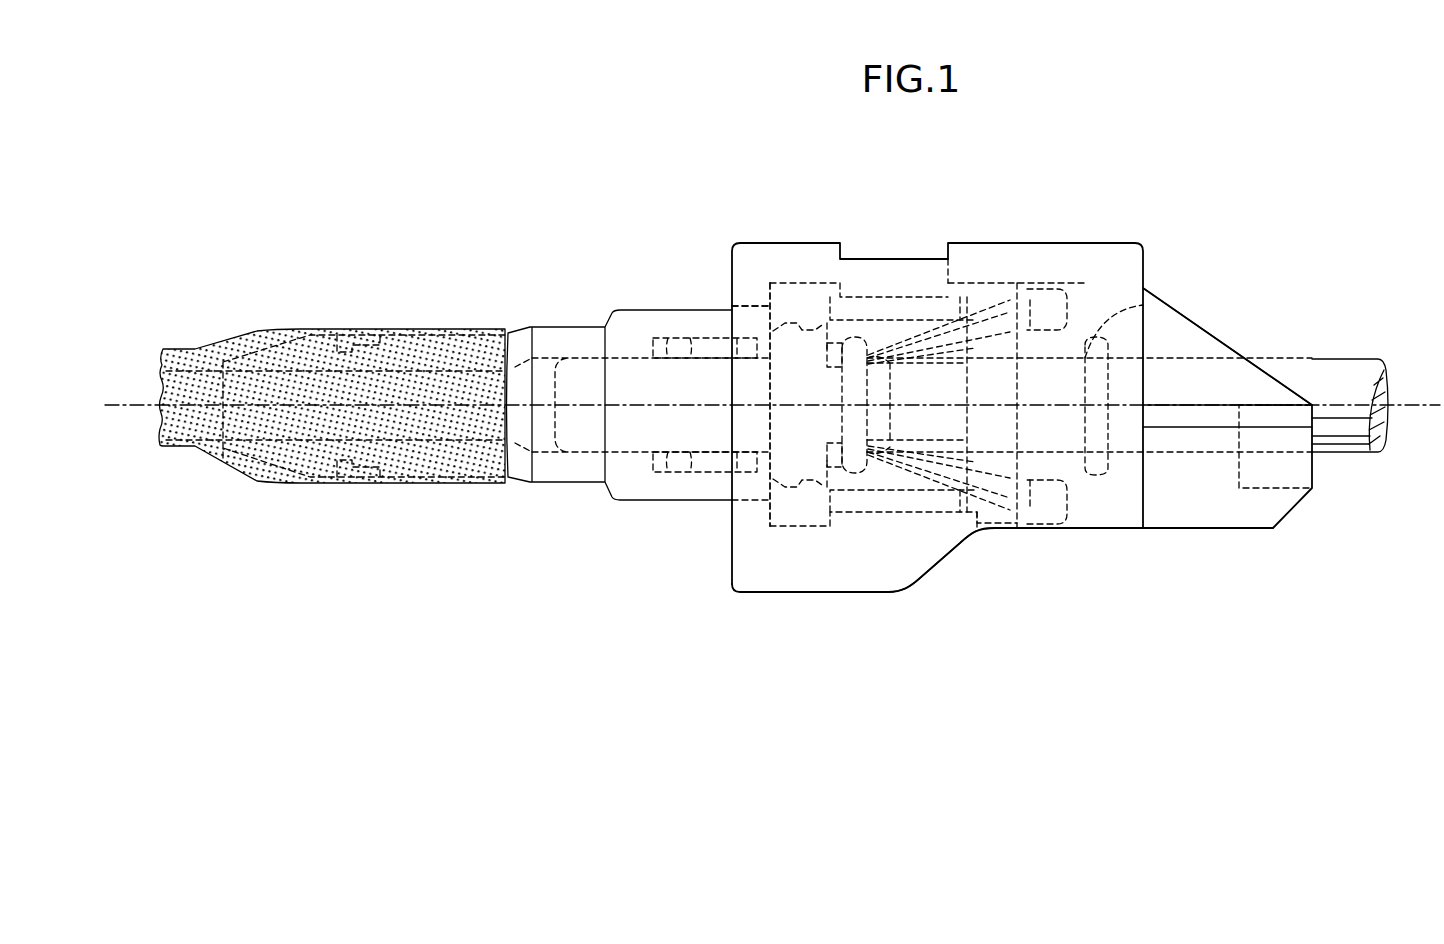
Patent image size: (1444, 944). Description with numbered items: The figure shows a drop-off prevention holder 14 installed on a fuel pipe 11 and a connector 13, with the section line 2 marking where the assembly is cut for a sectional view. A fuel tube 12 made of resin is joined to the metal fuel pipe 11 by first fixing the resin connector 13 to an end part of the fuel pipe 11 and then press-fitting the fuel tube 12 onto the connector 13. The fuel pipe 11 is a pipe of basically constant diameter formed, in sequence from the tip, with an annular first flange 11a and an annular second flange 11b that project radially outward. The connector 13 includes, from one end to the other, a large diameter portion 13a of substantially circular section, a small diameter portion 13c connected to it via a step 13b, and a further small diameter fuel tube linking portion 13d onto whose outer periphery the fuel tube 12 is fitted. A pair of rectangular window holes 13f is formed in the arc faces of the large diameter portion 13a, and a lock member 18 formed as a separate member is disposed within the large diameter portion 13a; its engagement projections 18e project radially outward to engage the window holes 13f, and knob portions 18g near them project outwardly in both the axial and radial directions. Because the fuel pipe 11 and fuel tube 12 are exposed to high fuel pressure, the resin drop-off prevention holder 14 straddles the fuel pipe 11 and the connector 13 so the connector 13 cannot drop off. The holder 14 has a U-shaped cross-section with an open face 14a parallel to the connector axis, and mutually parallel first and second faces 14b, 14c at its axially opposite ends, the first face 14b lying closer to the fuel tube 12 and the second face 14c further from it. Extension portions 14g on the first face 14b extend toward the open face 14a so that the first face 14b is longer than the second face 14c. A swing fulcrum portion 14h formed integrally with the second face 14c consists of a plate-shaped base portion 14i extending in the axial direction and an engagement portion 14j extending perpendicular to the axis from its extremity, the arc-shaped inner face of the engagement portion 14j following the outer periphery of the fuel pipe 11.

The section line 2- 2 is at (153, 404).
The fuel pipe 11 is at (1331, 347).
The first flange 11a is at (860, 338).
The second flange 11b is at (1110, 296).
The fuel tube 12 is at (332, 368).
The connector 13 is at (762, 411).
The large diameter portion 13a is at (805, 286).
The step 13b is at (768, 296).
The small diameter portion 13c is at (700, 312).
The fuel tube linking portion 13d is at (379, 336).
The window hole 13f is at (858, 320).
The drop-off prevention holder 14 is at (1005, 421).
The open face 14a is at (912, 586).
The first face 14b is at (745, 425).
The second face 14c is at (1130, 497).
The extension portion 14g is at (745, 582).
The swing fulcrum portion 14h is at (1250, 348).
The base portion 14i is at (1212, 515).
The engagement portion 14j is at (1268, 490).
The lock member 18 is at (1026, 405).
The engagement projection 18e is at (963, 290).
The knob portion 18g is at (1040, 290).